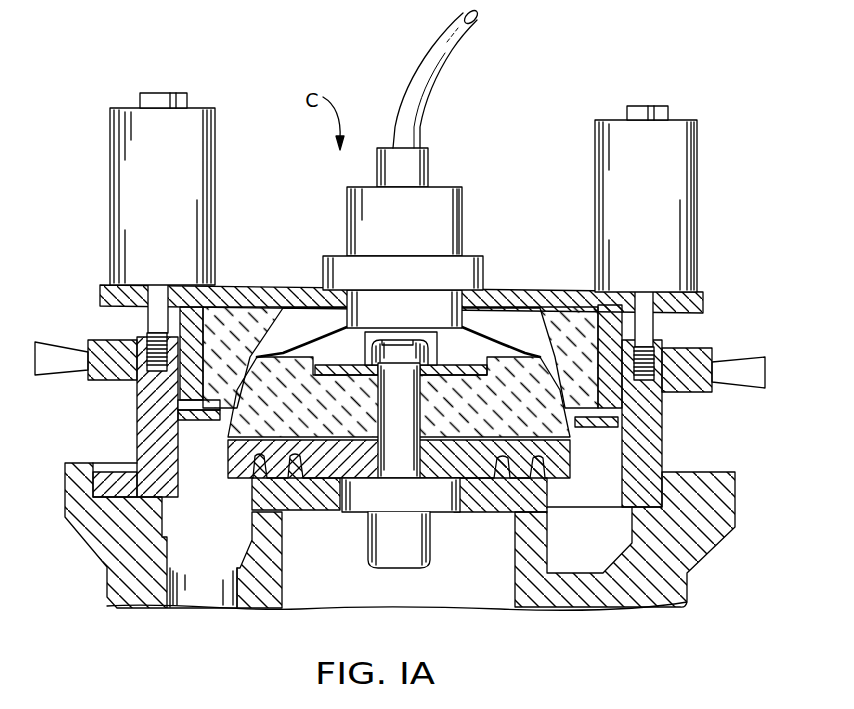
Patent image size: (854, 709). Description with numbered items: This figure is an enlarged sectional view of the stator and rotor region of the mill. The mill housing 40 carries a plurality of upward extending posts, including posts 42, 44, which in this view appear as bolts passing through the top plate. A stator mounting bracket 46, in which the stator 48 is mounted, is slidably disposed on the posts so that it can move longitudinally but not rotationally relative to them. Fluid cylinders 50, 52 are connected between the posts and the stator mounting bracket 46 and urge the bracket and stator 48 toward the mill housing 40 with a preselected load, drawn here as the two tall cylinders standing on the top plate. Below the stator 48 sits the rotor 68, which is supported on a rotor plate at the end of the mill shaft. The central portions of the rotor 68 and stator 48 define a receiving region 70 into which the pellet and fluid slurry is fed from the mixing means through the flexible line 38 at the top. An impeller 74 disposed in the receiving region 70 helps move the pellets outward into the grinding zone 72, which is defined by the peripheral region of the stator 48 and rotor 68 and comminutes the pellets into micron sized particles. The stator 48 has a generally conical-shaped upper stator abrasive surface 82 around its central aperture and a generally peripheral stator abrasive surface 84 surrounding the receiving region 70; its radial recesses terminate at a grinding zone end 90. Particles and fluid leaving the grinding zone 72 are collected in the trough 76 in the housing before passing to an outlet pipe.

The flexible tube 38 is at (433, 40).
The mill housing 40 is at (672, 585).
The post 42 is at (655, 333).
The post 44 is at (155, 313).
The stator mounting bracket 46 is at (670, 305).
The stator 48 is at (655, 326).
The fluid cylinder 50 is at (680, 148).
The fluid cylinder 52 is at (125, 147).
The rotor 68 is at (243, 437).
The receiving region 70 is at (375, 333).
The grinding zone 72 is at (240, 412).
The impeller 74 is at (312, 330).
The trough 76 is at (170, 521).
The upper stator abrasive surface 82 is at (478, 345).
The peripheral stator abrasive surface 84 is at (284, 308).
The grinding zone end 90 is at (567, 458).